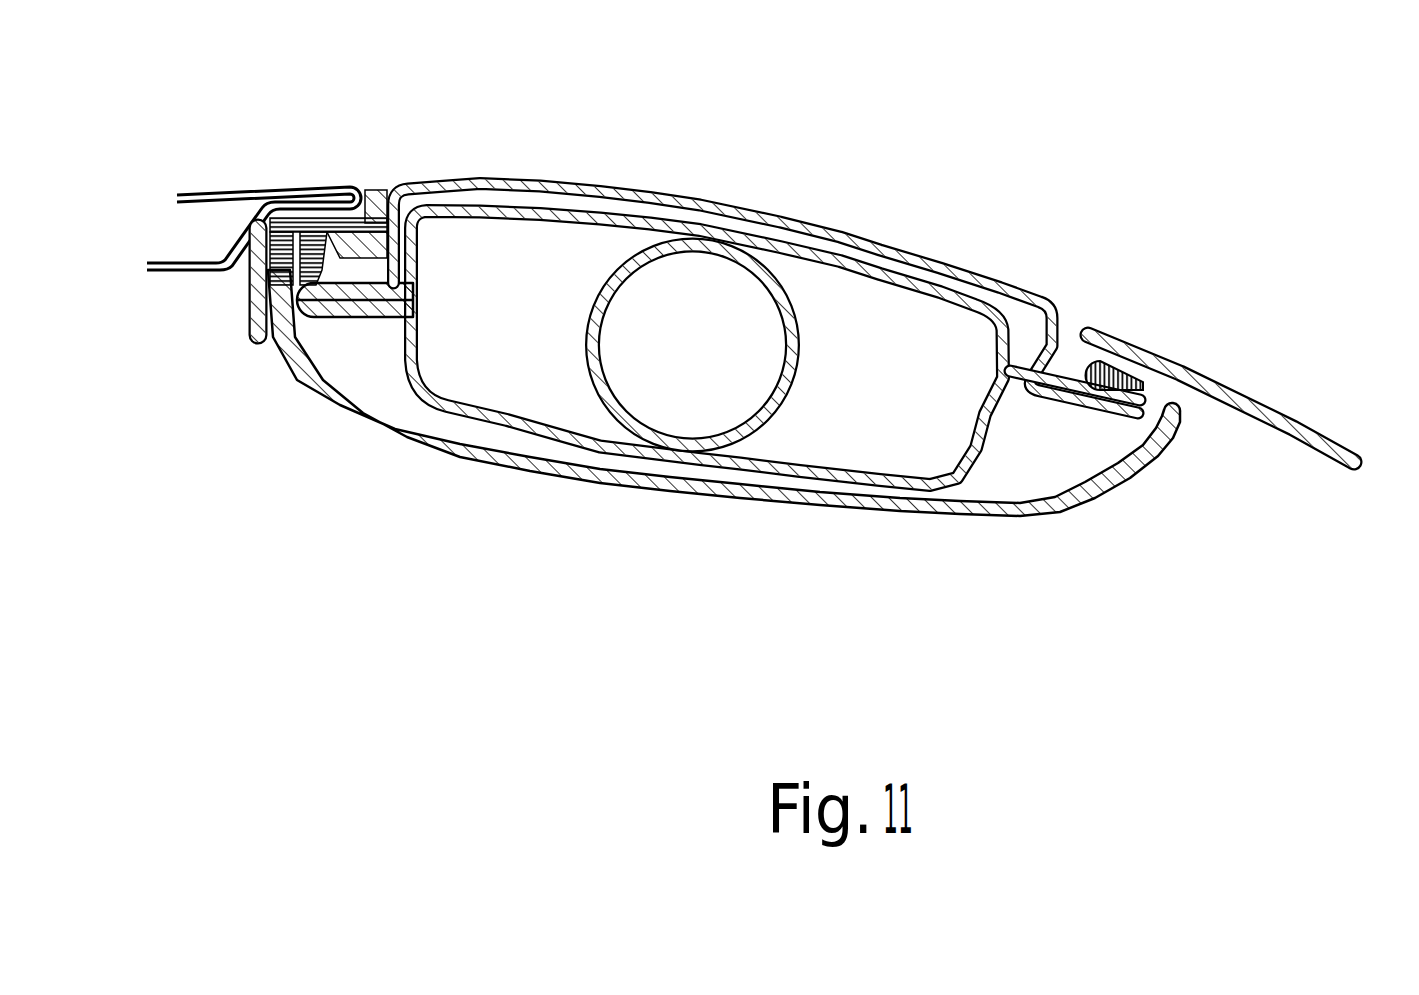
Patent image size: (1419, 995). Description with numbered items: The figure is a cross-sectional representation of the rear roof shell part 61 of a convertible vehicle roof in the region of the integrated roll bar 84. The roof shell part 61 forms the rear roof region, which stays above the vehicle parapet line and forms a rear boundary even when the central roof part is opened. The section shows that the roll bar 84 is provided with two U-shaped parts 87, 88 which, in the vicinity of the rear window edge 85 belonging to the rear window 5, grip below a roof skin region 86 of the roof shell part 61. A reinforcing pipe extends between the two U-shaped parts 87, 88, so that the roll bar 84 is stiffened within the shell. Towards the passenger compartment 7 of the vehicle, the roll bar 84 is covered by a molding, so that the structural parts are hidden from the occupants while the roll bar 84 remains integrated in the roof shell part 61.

The rear window 5 is at (1296, 403).
The passenger compartment 7 is at (310, 600).
The roof shell part 61 is at (709, 331).
The roll bar 84 is at (990, 464).
The rear window edge 85 is at (1118, 355).
The roof skin region 86 is at (587, 186).
The U-shaped part 87 is at (978, 292).
The U-shaped part 88 is at (408, 340).